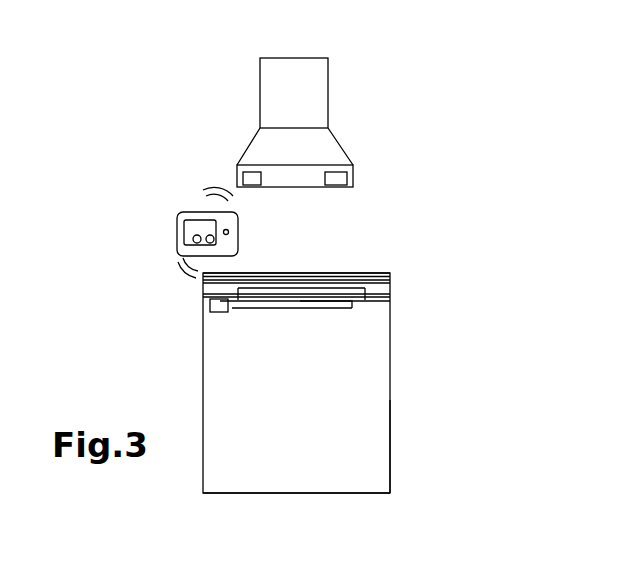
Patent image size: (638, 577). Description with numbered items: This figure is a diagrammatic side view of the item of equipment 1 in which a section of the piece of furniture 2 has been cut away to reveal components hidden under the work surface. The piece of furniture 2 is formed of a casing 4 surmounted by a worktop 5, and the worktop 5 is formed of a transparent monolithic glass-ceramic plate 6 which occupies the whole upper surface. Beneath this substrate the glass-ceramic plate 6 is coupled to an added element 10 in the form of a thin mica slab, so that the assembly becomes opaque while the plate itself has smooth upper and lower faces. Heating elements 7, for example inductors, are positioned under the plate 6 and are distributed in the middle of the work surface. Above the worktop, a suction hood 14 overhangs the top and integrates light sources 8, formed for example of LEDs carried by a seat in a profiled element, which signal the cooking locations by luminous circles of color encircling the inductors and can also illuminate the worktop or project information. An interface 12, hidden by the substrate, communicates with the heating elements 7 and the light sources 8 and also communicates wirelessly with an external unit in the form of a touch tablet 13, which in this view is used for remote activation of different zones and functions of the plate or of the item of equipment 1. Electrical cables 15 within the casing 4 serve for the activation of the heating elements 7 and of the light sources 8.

The item of equipment 1 is at (156, 151).
The piece of furniture 2 is at (391, 345).
The casing 4 is at (380, 440).
The worktop 5 is at (356, 272).
The glass-ceramic plate 6 is at (392, 277).
The heating elements 7 is at (331, 272).
The light sources 8 is at (253, 142).
The added element 10 is at (203, 283).
The interface 12 is at (210, 314).
The touch tablet 13 is at (176, 227).
The suction hood 14 is at (316, 91).
The electrical cables 15 is at (350, 308).